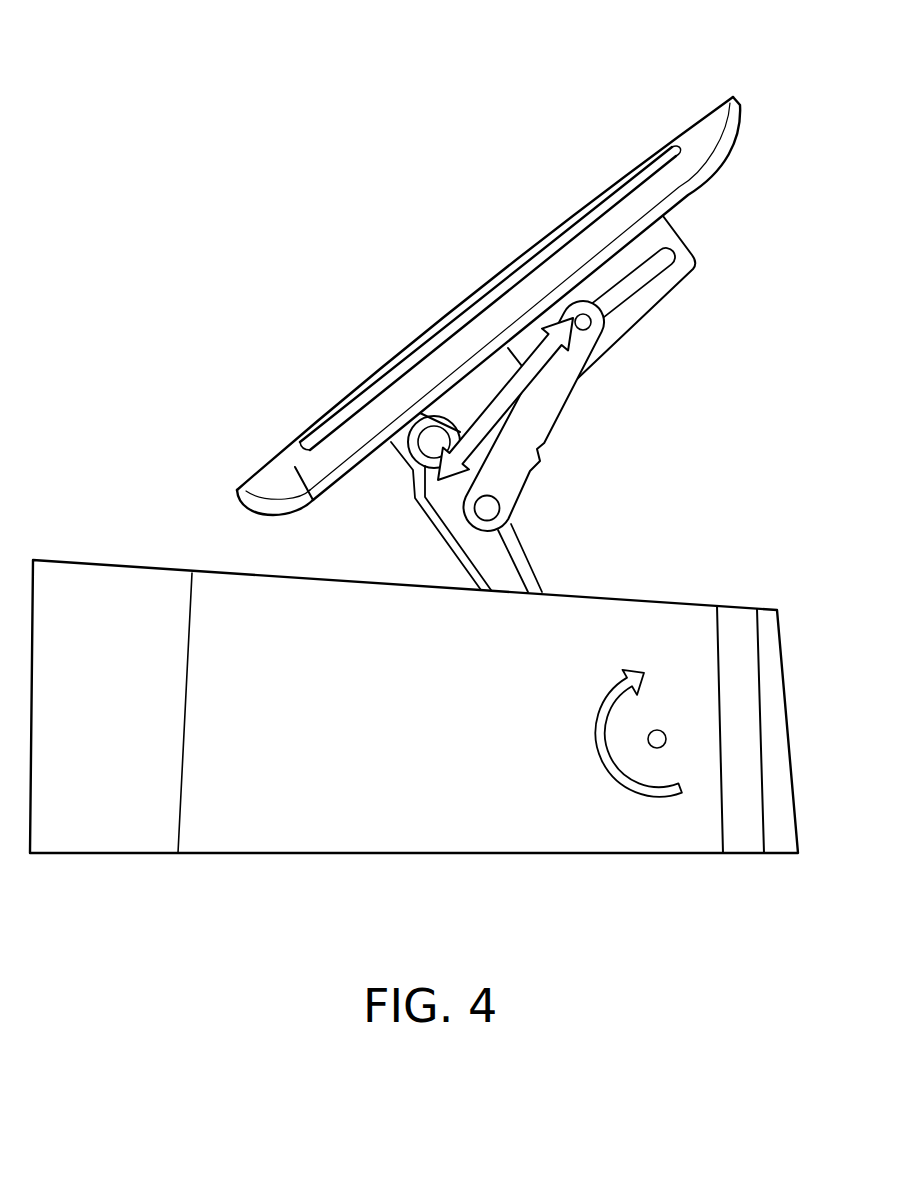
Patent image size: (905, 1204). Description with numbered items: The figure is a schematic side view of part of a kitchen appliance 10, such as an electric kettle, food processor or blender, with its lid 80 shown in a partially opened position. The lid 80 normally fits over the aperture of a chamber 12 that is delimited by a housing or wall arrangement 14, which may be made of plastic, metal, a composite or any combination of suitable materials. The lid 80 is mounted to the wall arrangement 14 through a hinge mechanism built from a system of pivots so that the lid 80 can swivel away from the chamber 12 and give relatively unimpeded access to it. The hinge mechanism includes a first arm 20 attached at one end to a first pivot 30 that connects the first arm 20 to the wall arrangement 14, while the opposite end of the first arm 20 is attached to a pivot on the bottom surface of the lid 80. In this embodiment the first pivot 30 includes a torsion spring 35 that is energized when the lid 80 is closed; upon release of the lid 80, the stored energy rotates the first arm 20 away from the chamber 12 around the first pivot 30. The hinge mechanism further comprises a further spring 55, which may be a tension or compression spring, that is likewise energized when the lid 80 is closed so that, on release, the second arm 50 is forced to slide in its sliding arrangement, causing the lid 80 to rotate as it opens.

The kitchen appliance 10 is at (247, 116).
The chamber 12 is at (291, 840).
The wall arrangement 14 is at (86, 840).
The first arm 20 is at (502, 573).
The first pivot 30 is at (684, 739).
The torsion spring 35 is at (660, 800).
The second arm 50 is at (552, 402).
The further spring 55 is at (513, 418).
The lid 80 is at (345, 447).